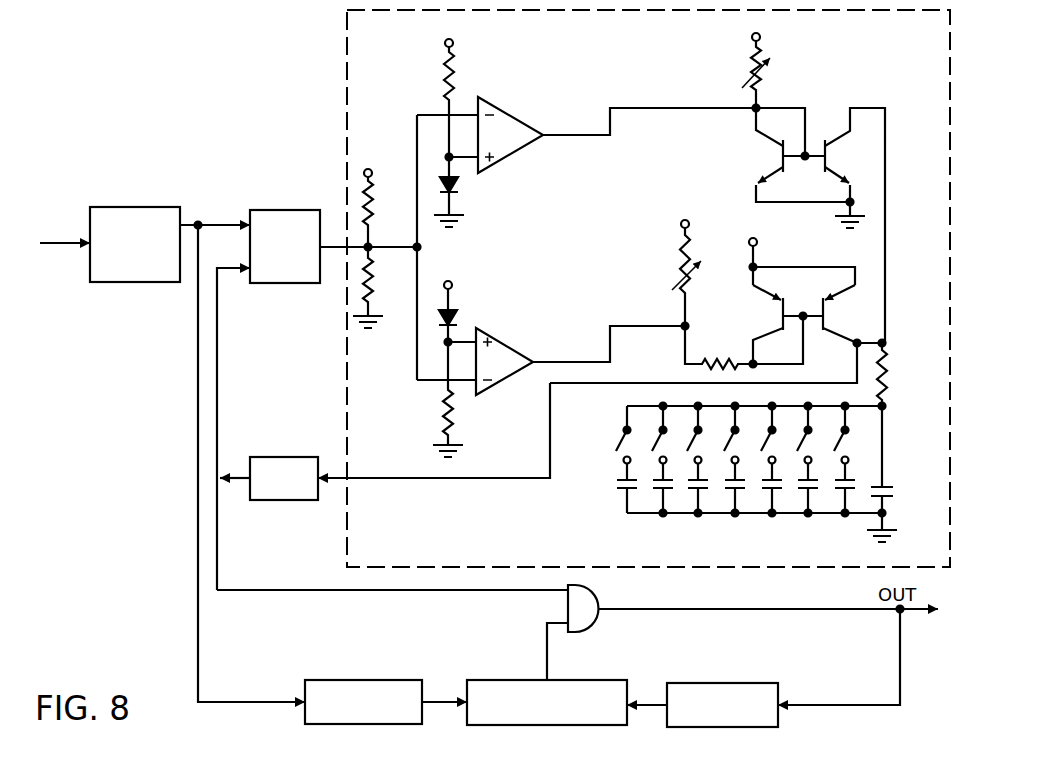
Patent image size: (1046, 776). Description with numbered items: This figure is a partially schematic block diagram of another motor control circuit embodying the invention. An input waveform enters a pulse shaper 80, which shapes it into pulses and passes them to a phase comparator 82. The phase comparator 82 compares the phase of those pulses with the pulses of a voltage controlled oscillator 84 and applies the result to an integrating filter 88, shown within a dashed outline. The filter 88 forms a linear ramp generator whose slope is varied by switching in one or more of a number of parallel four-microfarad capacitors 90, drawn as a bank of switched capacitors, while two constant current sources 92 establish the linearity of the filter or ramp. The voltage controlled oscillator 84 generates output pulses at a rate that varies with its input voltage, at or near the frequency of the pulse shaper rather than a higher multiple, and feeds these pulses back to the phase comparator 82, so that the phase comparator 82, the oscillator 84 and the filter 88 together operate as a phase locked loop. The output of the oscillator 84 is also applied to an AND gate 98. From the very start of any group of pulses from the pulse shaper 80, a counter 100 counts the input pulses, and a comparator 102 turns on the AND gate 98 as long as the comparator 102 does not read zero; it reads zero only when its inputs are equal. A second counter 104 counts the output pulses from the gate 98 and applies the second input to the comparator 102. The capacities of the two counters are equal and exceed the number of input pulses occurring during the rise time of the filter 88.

The pulse shaper 80 is at (146, 283).
The phase comparator 82 is at (289, 210).
The voltage controlled oscillator 84 is at (306, 500).
The integrating filter 88 is at (347, 106).
The capacitors 90 is at (640, 511).
The constant current sources 92 is at (646, 87).
The AND gate 98 is at (600, 602).
The counter 100 is at (356, 680).
The comparator 102 is at (517, 680).
The counter 104 is at (724, 683).